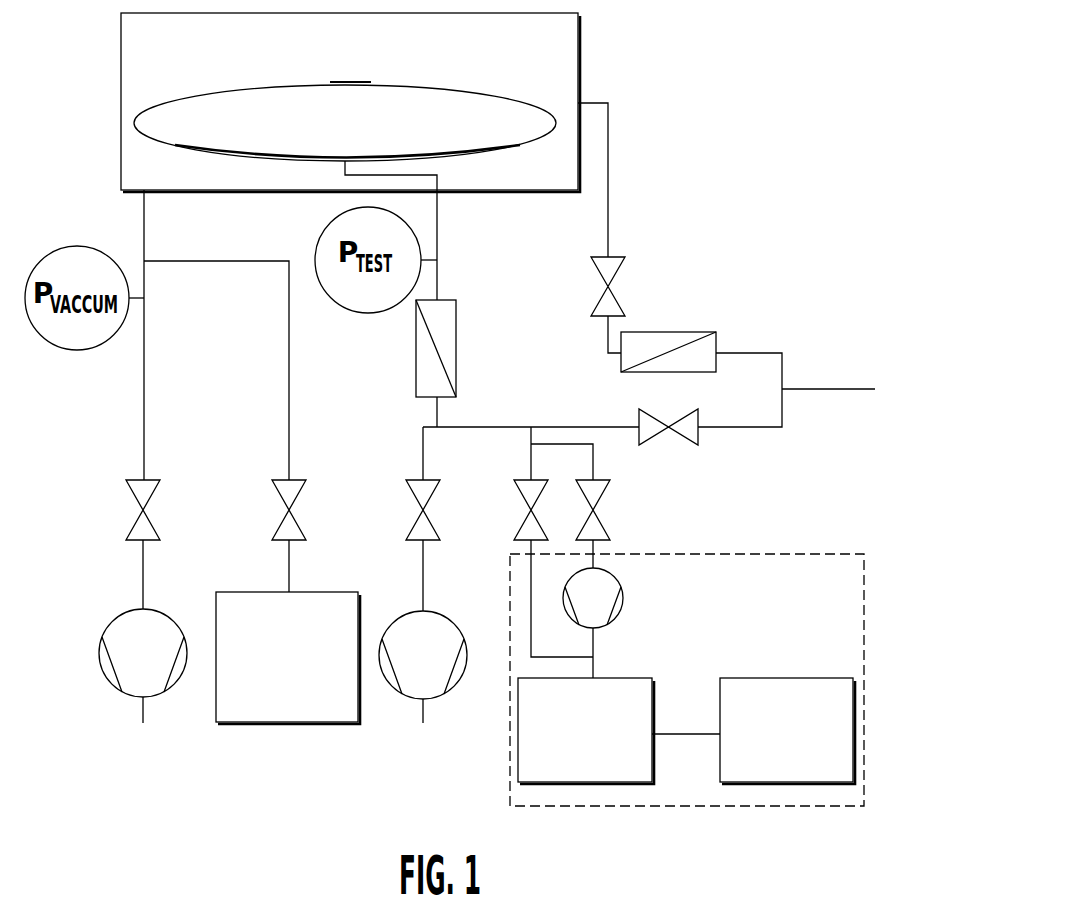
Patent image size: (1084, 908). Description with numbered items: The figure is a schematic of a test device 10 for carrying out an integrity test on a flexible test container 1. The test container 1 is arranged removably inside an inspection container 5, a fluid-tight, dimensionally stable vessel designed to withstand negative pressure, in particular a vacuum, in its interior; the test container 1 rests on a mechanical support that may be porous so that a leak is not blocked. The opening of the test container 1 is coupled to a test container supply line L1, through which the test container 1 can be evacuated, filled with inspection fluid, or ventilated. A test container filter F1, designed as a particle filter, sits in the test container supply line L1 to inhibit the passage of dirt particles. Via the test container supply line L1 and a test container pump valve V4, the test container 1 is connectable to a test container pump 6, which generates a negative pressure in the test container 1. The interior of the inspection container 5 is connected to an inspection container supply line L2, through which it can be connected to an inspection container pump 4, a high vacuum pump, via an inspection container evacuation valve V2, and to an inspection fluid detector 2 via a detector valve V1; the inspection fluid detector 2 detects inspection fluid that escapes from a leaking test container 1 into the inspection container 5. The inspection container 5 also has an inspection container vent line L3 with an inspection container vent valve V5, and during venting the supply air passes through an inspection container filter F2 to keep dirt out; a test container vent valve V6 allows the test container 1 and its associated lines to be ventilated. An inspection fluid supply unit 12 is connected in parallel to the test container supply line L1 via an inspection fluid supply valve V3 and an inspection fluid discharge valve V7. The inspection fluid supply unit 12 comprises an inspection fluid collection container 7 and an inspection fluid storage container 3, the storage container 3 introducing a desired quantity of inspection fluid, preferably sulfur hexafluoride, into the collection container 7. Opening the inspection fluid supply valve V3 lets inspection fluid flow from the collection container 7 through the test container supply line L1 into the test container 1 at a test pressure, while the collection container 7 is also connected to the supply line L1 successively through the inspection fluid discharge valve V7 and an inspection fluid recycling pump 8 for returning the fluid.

The flexible test container 1 is at (343, 154).
The inspection fluid detector 2 is at (279, 692).
The inspection fluid storage container 3 is at (787, 731).
The inspection container pump 4 is at (136, 668).
The inspection container 5 is at (121, 46).
The test container pump 6 is at (416, 670).
The inspection fluid collection container 7 is at (577, 775).
The inspection fluid recycling pump 8 is at (587, 608).
The test device 10 is at (704, 62).
The inspection fluid supply unit 12 is at (700, 554).
The test container supply line L1 is at (437, 238).
The inspection container supply line L2 is at (144, 233).
The inspection container vent line L3 is at (608, 235).
The detector valve V1 is at (300, 510).
The inspection container evacuation valve V2 is at (154, 510).
The inspection fluid supply valve V3 is at (543, 510).
The test container pump valve V4 is at (435, 510).
The inspection container vent valve V5 is at (618, 286).
The test container vent valve V6 is at (668, 441).
The inspection fluid discharge valve V7 is at (605, 510).
The test container filter F1 is at (424, 348).
The inspection container filter F2 is at (668, 367).